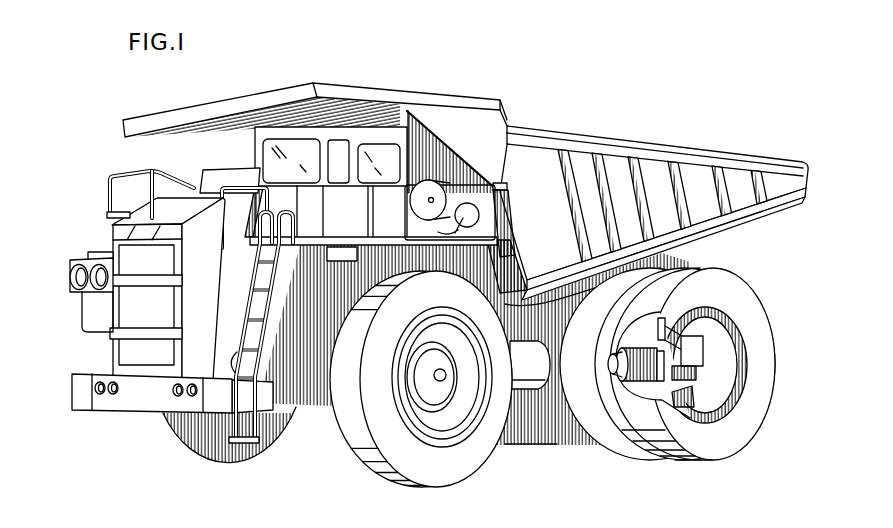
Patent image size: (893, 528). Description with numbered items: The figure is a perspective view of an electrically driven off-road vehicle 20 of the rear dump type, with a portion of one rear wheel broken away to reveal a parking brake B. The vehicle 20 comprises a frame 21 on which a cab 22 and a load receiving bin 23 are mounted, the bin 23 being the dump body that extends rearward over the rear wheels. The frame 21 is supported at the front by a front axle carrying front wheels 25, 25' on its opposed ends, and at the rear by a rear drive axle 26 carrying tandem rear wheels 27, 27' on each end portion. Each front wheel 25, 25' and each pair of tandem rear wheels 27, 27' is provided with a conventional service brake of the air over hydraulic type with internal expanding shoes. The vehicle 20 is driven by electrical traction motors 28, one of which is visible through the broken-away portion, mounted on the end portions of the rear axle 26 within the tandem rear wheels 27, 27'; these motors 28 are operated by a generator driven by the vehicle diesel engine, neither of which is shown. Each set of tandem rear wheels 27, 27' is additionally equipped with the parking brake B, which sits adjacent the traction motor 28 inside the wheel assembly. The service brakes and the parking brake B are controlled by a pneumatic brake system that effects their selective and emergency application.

The off-road vehicle 20 is at (420, 297).
The frame 21 is at (640, 268).
The cab 22 is at (381, 163).
The load receiving bin 23 is at (572, 147).
The front wheel 25 is at (418, 391).
The front wheel 25' is at (229, 454).
The rear drive axle 26 is at (613, 364).
The tandem rear wheel 27 is at (685, 384).
The tandem rear wheel 27' is at (650, 385).
The electrical traction motor 28 is at (634, 352).
The parking brake B is at (697, 354).